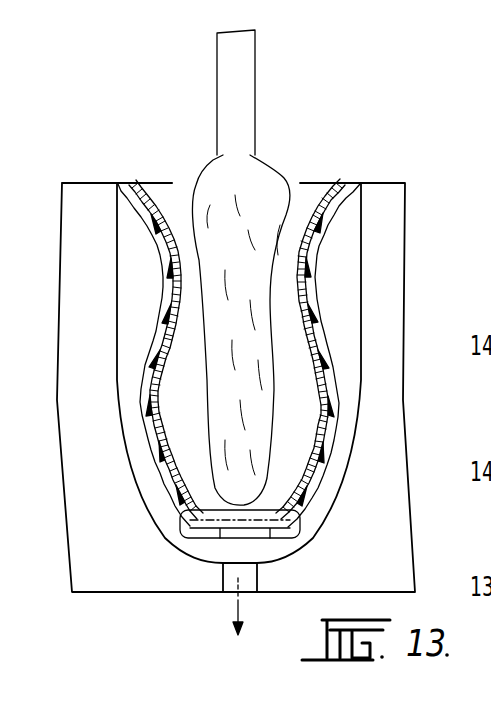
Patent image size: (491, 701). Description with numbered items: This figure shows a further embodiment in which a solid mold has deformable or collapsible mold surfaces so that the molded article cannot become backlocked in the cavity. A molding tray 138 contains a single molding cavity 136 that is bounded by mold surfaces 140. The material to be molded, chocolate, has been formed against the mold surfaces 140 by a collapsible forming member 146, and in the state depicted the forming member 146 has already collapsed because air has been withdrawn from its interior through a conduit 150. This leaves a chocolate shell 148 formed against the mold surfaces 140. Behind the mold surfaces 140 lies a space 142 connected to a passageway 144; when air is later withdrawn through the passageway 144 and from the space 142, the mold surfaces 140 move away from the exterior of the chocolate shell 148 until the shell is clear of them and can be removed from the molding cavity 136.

The molding cavity 136 is at (167, 183).
The molding tray 138 is at (368, 557).
The mold surfaces 140 is at (340, 388).
The space 142 is at (342, 262).
The passageway 144 is at (223, 580).
The collapsible forming member 146 is at (262, 178).
The chocolate shell 148 is at (298, 287).
The conduit 150 is at (248, 78).